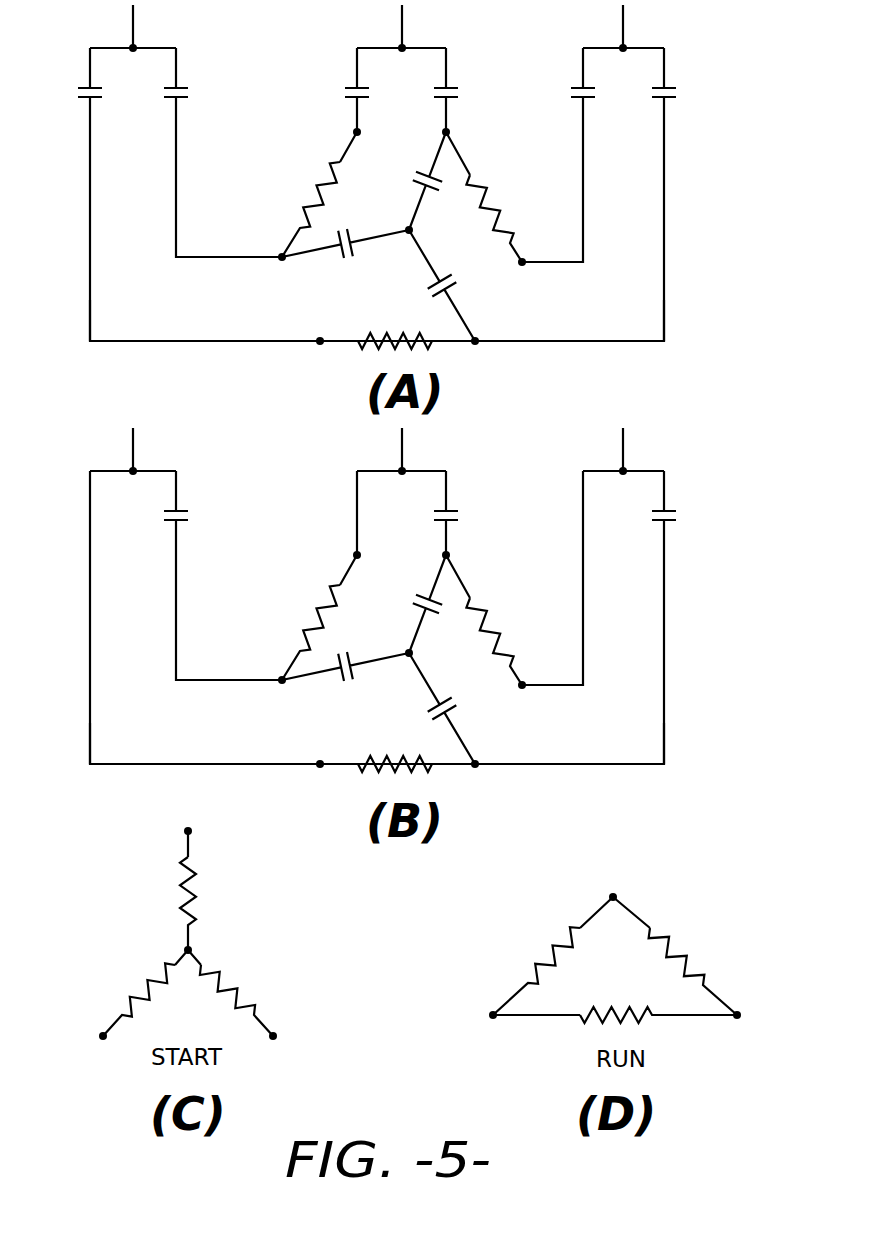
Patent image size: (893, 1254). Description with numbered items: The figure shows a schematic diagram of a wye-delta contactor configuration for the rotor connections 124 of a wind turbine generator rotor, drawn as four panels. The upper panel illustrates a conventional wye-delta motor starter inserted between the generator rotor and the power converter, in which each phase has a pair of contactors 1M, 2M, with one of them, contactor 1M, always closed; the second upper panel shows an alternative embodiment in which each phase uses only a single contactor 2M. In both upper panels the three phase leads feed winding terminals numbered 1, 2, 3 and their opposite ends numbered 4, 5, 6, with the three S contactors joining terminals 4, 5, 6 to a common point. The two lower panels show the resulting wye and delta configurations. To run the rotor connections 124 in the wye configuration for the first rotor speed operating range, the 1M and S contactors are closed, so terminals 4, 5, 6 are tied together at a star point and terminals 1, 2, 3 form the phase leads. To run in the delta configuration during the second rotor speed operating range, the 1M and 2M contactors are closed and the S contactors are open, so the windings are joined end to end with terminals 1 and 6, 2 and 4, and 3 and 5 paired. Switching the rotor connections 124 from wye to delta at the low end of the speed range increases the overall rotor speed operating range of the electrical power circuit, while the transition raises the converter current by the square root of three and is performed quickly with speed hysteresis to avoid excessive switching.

The rotor connections 124 is at (696, 585).
The motor lead terminal 1 is at (420, 641).
The motor lead terminal 2 is at (417, 656).
The motor lead terminal 3 is at (400, 583).
The motor lead terminal 4 is at (460, 680).
The motor lead terminal 5 is at (482, 398).
The motor lead terminal 6 is at (275, 455).
The contactor 1M is at (320, 72).
The contactor 2M is at (437, 284).
The contactor S is at (378, 448).